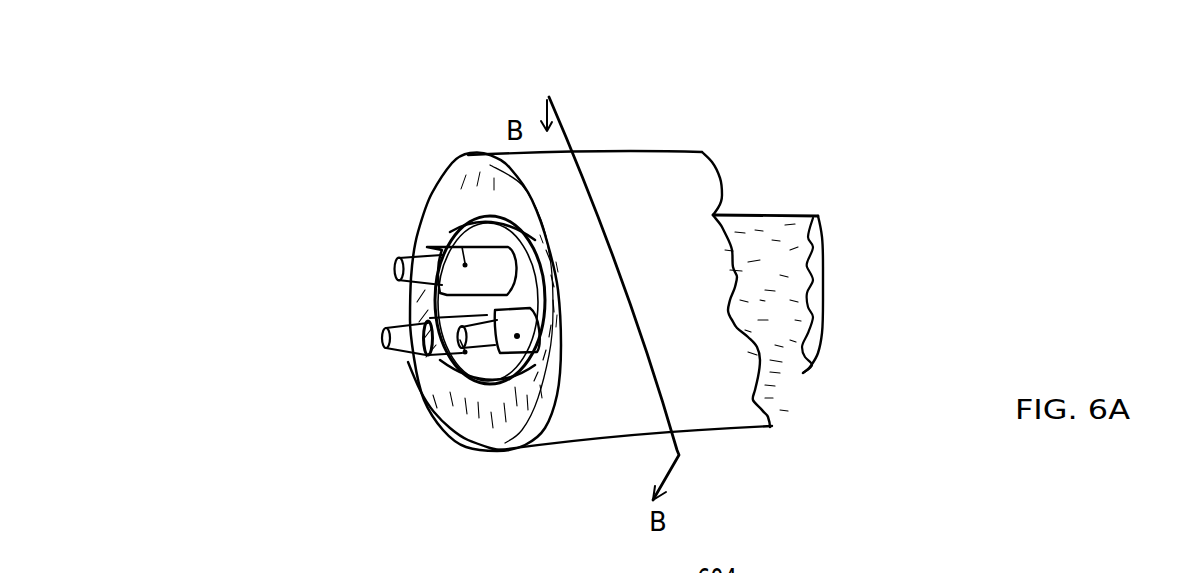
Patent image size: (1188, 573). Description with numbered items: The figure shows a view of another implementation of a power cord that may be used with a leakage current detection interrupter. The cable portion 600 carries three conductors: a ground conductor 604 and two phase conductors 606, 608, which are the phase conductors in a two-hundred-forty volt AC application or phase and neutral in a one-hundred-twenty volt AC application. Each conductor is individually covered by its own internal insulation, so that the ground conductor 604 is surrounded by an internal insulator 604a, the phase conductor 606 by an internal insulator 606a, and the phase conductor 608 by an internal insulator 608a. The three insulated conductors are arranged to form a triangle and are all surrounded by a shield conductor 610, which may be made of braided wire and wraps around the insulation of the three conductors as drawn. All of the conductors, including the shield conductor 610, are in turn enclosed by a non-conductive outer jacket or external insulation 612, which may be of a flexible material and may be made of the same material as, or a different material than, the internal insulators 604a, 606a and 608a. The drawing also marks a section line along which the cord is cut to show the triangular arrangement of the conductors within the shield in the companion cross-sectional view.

The cable portion 600 is at (262, 93).
The ground conductor 604 is at (396, 268).
The internal insulator 604a is at (455, 240).
The phase conductor 606 is at (383, 340).
The internal insulator 606a is at (452, 376).
The phase conductor 608 is at (432, 358).
The internal insulator 608a is at (517, 338).
The shield conductor 610 is at (780, 216).
The external insulation 612 is at (645, 150).